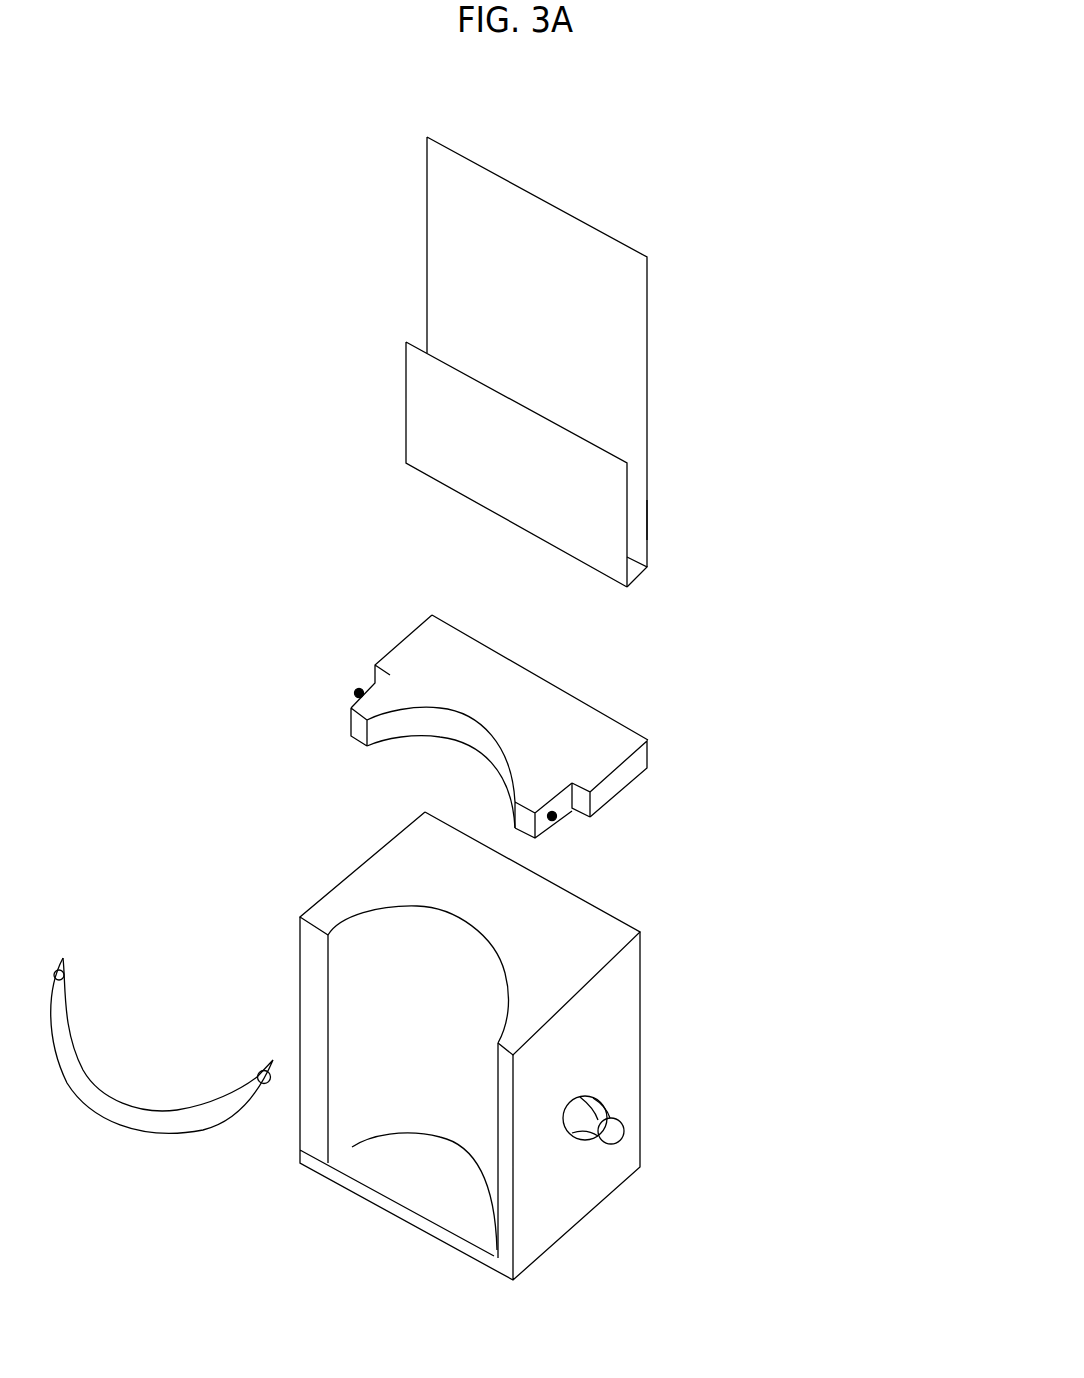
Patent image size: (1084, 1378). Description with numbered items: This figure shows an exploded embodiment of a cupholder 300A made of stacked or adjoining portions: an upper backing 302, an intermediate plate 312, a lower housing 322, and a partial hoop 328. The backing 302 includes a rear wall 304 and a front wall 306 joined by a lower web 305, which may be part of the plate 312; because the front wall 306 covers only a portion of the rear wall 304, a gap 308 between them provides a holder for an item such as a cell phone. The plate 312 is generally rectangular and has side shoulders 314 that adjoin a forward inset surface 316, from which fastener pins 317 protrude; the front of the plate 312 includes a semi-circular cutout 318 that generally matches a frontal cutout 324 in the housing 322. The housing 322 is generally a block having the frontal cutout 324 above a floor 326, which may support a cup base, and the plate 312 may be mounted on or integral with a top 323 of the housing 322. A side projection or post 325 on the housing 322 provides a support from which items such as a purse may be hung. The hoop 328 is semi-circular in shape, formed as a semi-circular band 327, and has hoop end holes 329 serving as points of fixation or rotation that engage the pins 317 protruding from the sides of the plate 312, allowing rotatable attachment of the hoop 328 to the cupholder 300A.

The cupholder 300A is at (810, 152).
The backing 302 is at (657, 370).
The rear wall 304 is at (450, 182).
The front wall 306 is at (423, 395).
The gap 308 is at (638, 520).
The lower web 305 is at (637, 570).
The plate 312 is at (627, 741).
The side shoulders 314 is at (616, 788).
The forward inset surface 316 is at (562, 807).
The pins 317 is at (353, 693).
The semi-circular cutout 318 is at (397, 726).
The housing 322 is at (650, 1022).
The top 323 is at (613, 942).
The frontal cutout 324 is at (353, 1115).
The post 325 is at (613, 1143).
The floor 326 is at (447, 1205).
The semi-circular band 327 is at (142, 1125).
The hoop 328 is at (87, 1050).
The hoop end holes 329 is at (52, 995).